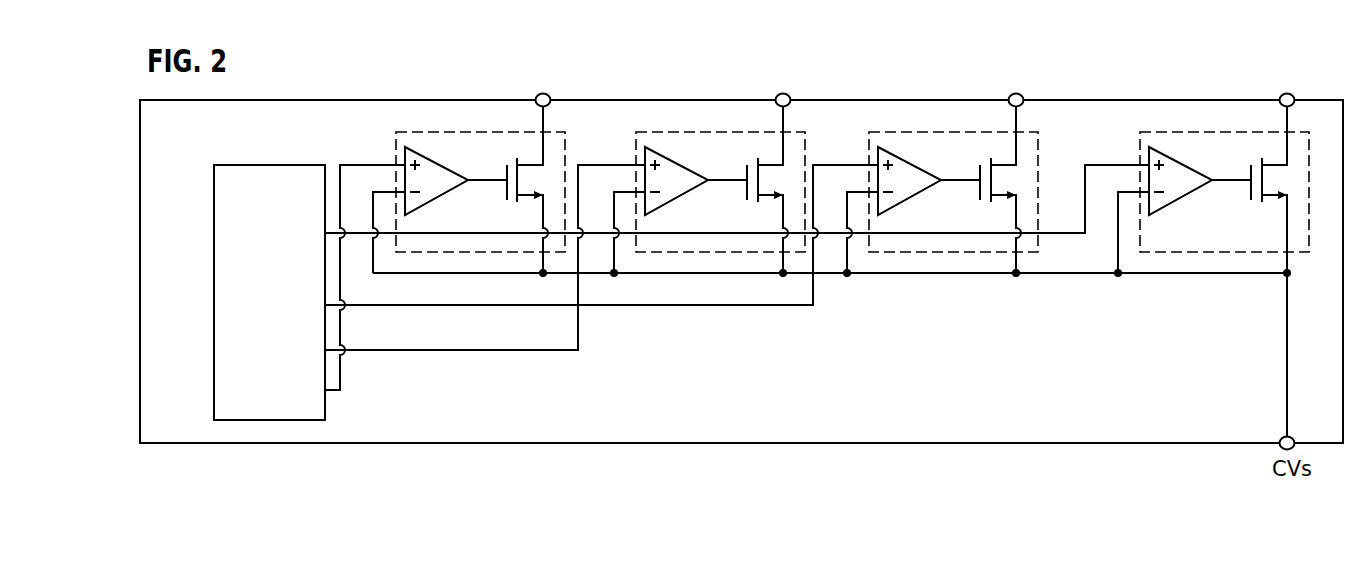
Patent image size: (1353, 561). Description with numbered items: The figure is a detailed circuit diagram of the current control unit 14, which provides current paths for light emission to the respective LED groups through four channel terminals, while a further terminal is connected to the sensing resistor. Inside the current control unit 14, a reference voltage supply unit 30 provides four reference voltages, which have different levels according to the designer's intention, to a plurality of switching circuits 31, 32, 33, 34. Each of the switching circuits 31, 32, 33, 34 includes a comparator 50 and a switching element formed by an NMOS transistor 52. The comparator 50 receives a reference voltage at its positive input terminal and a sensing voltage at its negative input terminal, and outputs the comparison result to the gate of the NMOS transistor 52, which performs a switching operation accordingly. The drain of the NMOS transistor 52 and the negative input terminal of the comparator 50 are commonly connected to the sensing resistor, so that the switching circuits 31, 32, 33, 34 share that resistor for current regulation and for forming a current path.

The current control unit 14 is at (386, 444).
The reference voltage supply unit 30 is at (213, 352).
The switching circuit 31 is at (472, 168).
The switching circuit 32 is at (661, 131).
The switching circuit 33 is at (895, 131).
The switching circuit 34 is at (1167, 131).
The comparator 50 is at (440, 197).
The NMOS transistor 52 is at (505, 194).